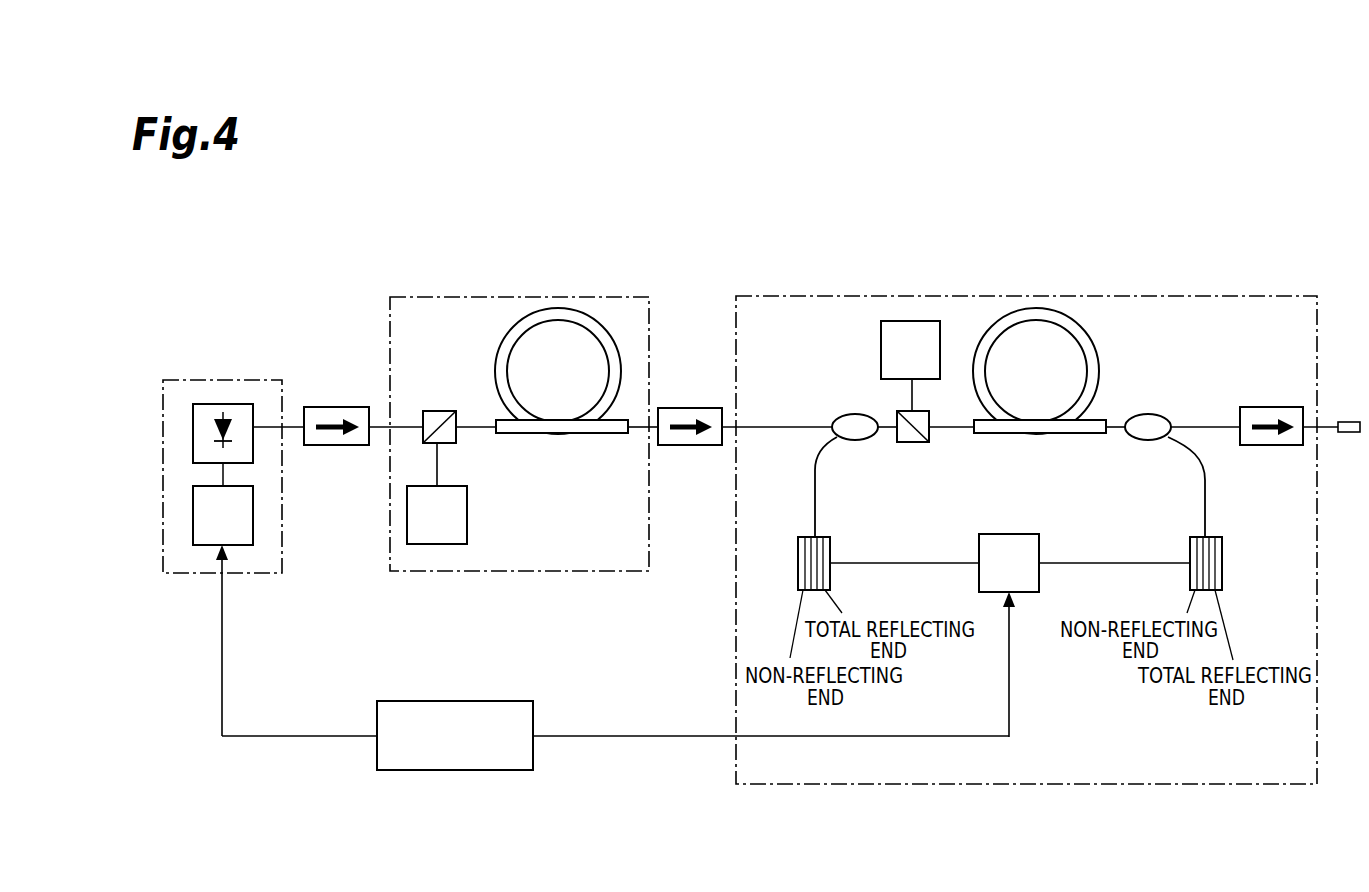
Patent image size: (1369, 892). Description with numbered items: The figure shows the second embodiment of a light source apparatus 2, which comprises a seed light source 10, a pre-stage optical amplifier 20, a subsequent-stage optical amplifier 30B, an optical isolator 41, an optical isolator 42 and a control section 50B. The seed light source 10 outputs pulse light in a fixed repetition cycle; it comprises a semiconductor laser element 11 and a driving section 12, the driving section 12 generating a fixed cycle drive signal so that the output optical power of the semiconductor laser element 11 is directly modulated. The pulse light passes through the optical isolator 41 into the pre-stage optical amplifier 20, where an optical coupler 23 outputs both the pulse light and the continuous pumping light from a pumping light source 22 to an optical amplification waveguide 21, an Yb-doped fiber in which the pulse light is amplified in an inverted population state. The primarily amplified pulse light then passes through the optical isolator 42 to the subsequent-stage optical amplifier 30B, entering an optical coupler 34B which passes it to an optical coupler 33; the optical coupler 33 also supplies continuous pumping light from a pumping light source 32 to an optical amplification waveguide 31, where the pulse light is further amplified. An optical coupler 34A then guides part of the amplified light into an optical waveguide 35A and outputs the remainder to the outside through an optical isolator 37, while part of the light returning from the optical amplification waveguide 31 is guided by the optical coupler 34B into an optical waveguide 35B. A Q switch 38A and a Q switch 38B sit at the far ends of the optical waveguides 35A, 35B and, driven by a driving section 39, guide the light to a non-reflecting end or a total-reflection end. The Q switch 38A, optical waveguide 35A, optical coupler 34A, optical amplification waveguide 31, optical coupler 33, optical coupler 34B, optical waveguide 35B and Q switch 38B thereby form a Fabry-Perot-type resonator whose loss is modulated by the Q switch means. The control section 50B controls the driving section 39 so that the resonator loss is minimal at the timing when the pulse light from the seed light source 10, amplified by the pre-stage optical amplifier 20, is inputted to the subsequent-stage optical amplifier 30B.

The light source apparatus 2 is at (1090, 228).
The seed light source 10 is at (189, 380).
The semiconductor laser element 11 is at (193, 437).
The driving section 12 is at (193, 520).
The optical isolator 41 is at (330, 447).
The pre-stage optical amplifier 20 is at (505, 297).
The optical amplification waveguide 21 is at (512, 336).
The pumping light source 22 is at (467, 518).
The optical coupler 23 is at (437, 411).
The optical isolator 42 is at (683, 447).
The subsequent-stage optical amplifier 30B is at (1213, 296).
The optical amplification waveguide 31 is at (1090, 330).
The pumping light source 32 is at (881, 350).
The optical coupler 33 is at (908, 445).
The optical coupler 34A is at (1148, 414).
The optical coupler 34B is at (856, 413).
The optical waveguide 35A is at (1205, 497).
The optical waveguide 35B is at (817, 497).
The optical isolator 37 is at (1262, 447).
The Q switch 38A is at (1190, 556).
The Q switch 38B is at (830, 553).
The driving section 39 is at (1042, 575).
The control section 50B is at (448, 770).